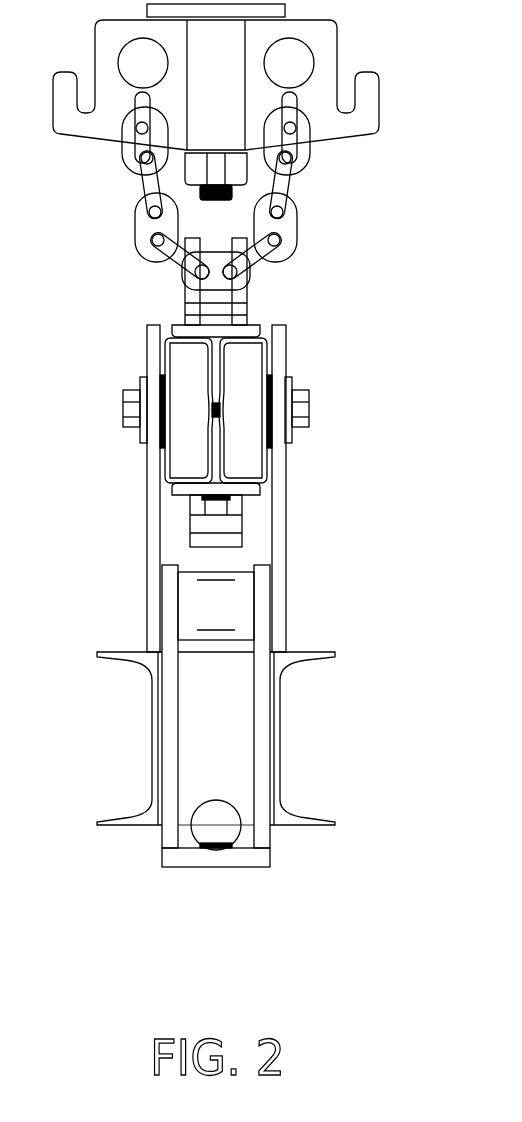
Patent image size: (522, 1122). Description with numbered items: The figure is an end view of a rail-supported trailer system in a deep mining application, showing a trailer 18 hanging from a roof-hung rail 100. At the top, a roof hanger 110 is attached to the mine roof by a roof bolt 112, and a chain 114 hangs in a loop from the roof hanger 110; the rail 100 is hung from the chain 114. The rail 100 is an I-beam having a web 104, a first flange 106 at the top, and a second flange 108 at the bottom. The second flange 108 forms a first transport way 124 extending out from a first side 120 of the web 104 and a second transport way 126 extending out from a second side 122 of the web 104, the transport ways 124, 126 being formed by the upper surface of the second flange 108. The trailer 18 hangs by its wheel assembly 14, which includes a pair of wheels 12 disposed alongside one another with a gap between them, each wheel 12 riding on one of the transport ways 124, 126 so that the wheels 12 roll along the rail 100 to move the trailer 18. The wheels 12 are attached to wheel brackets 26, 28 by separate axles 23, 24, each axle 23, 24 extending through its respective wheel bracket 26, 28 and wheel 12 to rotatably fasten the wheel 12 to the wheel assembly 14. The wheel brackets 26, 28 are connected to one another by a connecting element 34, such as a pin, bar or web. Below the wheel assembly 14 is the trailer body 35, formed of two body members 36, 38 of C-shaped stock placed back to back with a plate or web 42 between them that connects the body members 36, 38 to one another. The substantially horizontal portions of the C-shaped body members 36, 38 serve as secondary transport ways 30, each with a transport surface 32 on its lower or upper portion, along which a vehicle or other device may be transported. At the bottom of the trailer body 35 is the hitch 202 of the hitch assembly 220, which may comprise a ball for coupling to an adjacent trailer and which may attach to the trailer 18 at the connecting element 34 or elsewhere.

The roof hanger 110 is at (318, 36).
The roof bolt 112 is at (242, 175).
The chain 114 is at (137, 217).
The first flange 106 is at (180, 327).
The web 104 is at (213, 363).
The axle 23 is at (160, 380).
The axle 24 is at (288, 430).
The wheel bracket 26 is at (147, 568).
The wheel bracket 28 is at (286, 590).
The wheel 12 is at (245, 373).
The wheel assembly 14 is at (296, 390).
The first side of the web 120 is at (210, 433).
The second side of the web 122 is at (220, 425).
The first transport way 124 is at (177, 477).
The second transport way 126 is at (242, 487).
The second flange 108 is at (182, 492).
The rail 100 is at (245, 508).
The connecting element 34 is at (193, 613).
The secondary transport way 30 is at (322, 657).
The transport surface 32 is at (122, 652).
The trailer 18 is at (152, 710).
The hitch assembly 220 is at (262, 685).
The plate or web 42 is at (237, 713).
The first body member 36 is at (152, 760).
The second body member 38 is at (280, 748).
The trailer body 35 is at (280, 780).
The hitch 202 is at (230, 830).